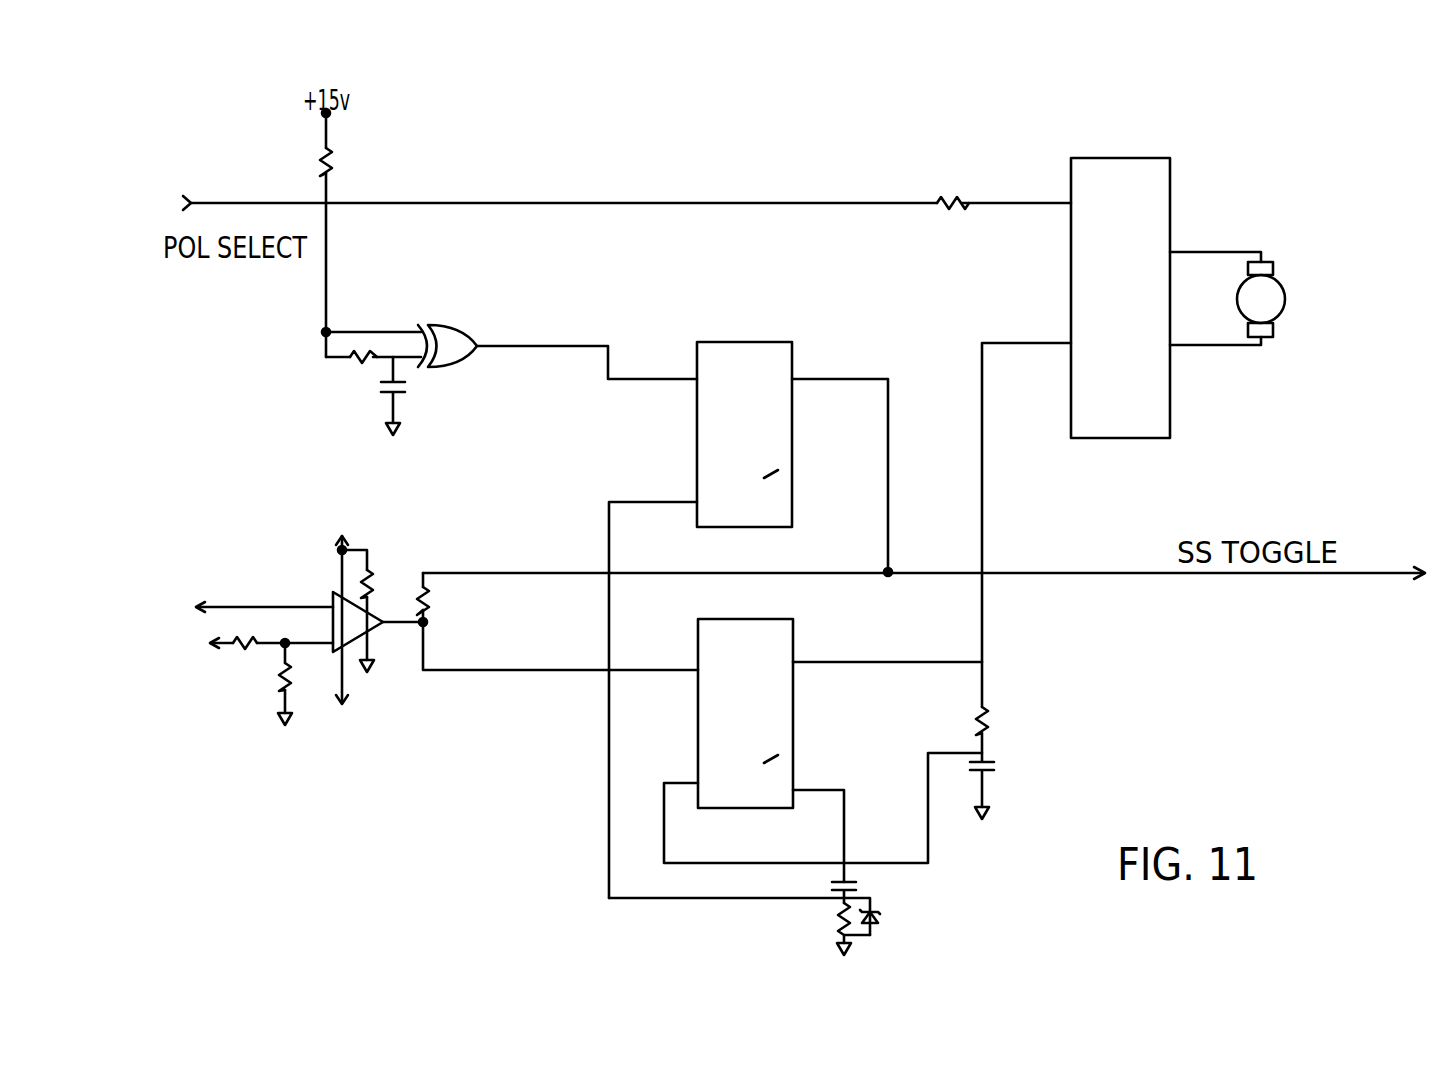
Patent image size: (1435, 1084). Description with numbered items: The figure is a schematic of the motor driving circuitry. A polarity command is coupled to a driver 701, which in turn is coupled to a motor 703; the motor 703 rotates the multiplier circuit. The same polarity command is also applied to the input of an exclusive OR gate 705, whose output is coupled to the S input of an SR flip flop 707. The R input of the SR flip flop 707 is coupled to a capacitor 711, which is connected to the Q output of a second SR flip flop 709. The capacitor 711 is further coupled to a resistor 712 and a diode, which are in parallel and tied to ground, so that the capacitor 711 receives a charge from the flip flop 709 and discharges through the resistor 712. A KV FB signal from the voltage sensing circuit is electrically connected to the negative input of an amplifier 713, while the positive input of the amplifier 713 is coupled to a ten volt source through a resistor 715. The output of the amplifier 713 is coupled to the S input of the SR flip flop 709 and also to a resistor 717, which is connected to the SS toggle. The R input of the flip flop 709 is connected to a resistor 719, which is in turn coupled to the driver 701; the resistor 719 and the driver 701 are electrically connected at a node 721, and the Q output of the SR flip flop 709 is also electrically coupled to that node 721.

The driver 701 is at (1163, 182).
The motor 703 is at (1285, 290).
The exclusive OR gate 705 is at (452, 352).
The SR flip flop 707 is at (782, 358).
The SR flip flop 709 is at (788, 718).
The capacitor 711 is at (848, 880).
The resistor 712 is at (855, 925).
The amplifier 713 is at (378, 615).
The resistor 715 is at (245, 650).
The resistor 717 is at (430, 601).
The resistor 719 is at (990, 722).
The node 721 is at (985, 663).